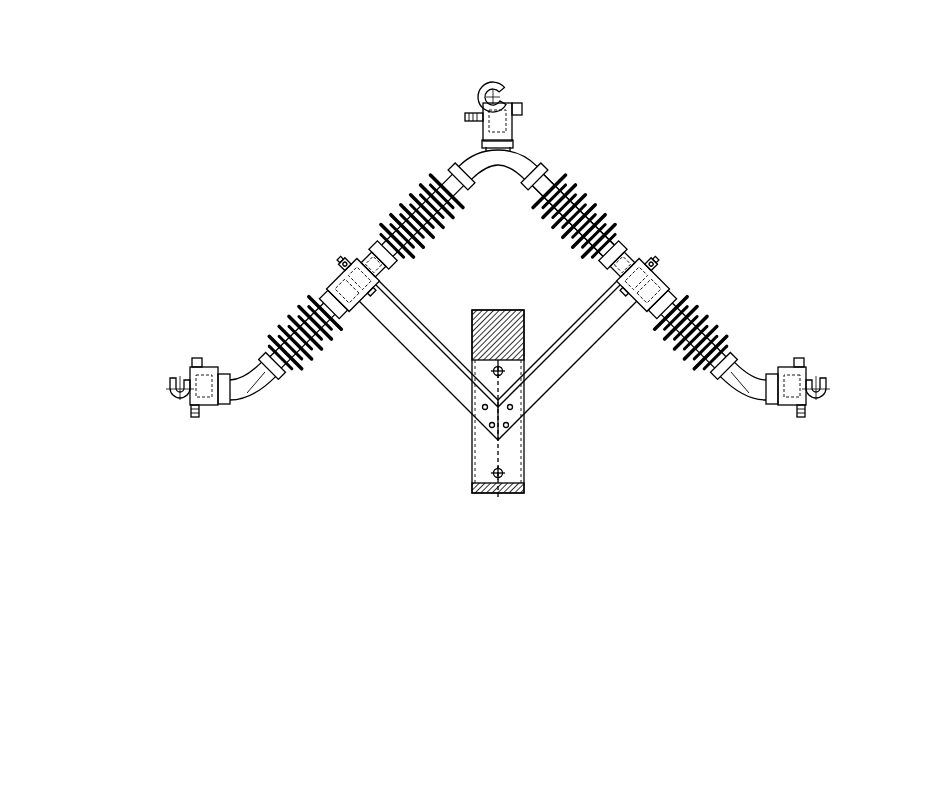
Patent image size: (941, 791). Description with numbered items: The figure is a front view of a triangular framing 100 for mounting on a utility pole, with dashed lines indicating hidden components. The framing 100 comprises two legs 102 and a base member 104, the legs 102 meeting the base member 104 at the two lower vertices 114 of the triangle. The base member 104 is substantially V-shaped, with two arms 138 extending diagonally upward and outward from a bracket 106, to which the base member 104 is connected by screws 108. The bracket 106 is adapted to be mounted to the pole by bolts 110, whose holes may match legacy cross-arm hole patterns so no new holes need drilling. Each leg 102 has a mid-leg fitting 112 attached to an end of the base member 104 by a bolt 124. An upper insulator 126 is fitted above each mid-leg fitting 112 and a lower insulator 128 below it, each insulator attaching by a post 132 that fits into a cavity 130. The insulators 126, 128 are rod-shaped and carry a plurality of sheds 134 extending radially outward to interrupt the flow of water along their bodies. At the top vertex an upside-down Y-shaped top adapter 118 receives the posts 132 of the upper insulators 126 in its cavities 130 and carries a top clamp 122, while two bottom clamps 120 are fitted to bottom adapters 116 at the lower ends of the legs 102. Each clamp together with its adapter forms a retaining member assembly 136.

The triangular framing 100 is at (853, 100).
The leg 102 is at (354, 286).
The base member 104 is at (443, 393).
The bracket 106 is at (527, 492).
The screw 108 is at (517, 412).
The bolt 110 is at (507, 470).
The mid-leg fitting 112 is at (419, 220).
The lower vertex 114 is at (362, 217).
The bottom adapter 116 is at (245, 405).
The top adapter 118 is at (540, 152).
The bottom clamp 120 is at (183, 360).
The top clamp 122 is at (520, 95).
The bolt 124 is at (344, 263).
The upper insulator 126 is at (628, 203).
The lower insulator 128 is at (705, 290).
The cavity 130 is at (642, 303).
The post 132 is at (732, 377).
The shed 134 is at (646, 281).
The retaining member assembly 136 is at (260, 350).
The arm 138 is at (572, 313).